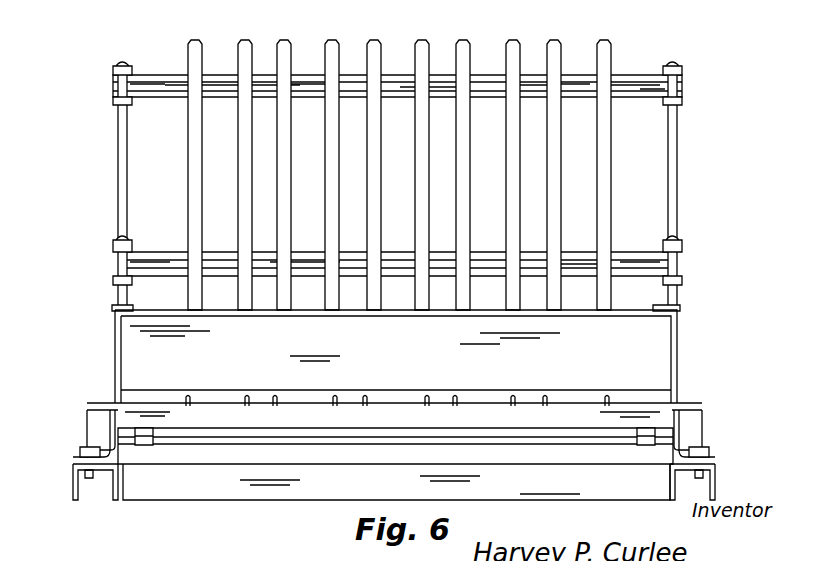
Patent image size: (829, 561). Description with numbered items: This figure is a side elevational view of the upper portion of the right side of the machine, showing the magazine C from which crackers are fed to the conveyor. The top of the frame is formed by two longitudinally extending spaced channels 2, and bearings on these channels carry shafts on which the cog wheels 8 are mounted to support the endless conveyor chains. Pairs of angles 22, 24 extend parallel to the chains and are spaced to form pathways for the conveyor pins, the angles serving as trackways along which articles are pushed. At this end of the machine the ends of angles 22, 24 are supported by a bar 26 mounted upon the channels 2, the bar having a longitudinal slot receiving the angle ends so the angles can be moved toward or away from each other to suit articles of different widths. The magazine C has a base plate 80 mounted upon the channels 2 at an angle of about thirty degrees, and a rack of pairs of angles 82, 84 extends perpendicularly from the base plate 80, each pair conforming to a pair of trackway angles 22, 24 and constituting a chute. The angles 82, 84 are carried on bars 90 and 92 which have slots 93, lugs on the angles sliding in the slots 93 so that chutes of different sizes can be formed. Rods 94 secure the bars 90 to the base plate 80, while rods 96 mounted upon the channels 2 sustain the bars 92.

The magazine C is at (117, 142).
The channel 2 is at (73, 482).
The cog wheel 8 is at (142, 445).
The angle 22 is at (513, 397).
The angle 24 is at (189, 395).
The bar 26 is at (653, 417).
The base plate 80 is at (657, 333).
The angle 82 is at (513, 48).
The angle 84 is at (464, 53).
The bar 90 is at (670, 262).
The bar 92 is at (678, 88).
The slot 93 is at (625, 80).
The rod 94 is at (664, 293).
The rod 96 is at (673, 166).